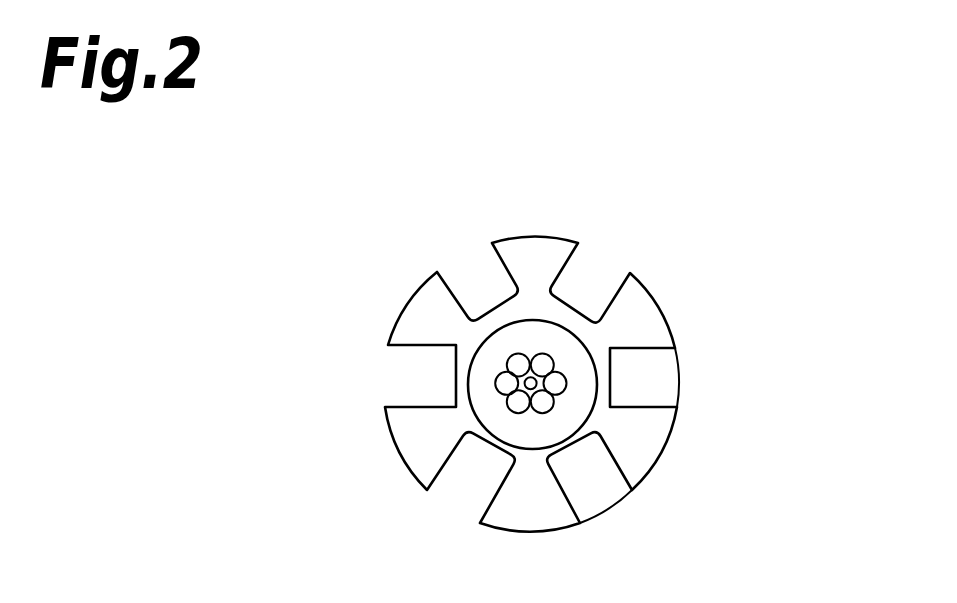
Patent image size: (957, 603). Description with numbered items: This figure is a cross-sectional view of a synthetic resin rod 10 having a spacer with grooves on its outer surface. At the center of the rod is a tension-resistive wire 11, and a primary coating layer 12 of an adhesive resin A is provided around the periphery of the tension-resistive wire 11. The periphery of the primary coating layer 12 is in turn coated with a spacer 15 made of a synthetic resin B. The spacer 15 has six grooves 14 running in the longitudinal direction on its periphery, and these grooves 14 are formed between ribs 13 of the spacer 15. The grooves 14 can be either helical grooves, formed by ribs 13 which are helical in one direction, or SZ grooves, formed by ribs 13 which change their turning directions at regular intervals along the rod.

The synthetic resin rod 10 is at (698, 237).
The tension-resistive wire 11 is at (543, 363).
The primary coating layer 12 is at (493, 407).
The rib 13 is at (652, 447).
The groove 14 is at (672, 378).
The spacer 15 is at (817, 407).